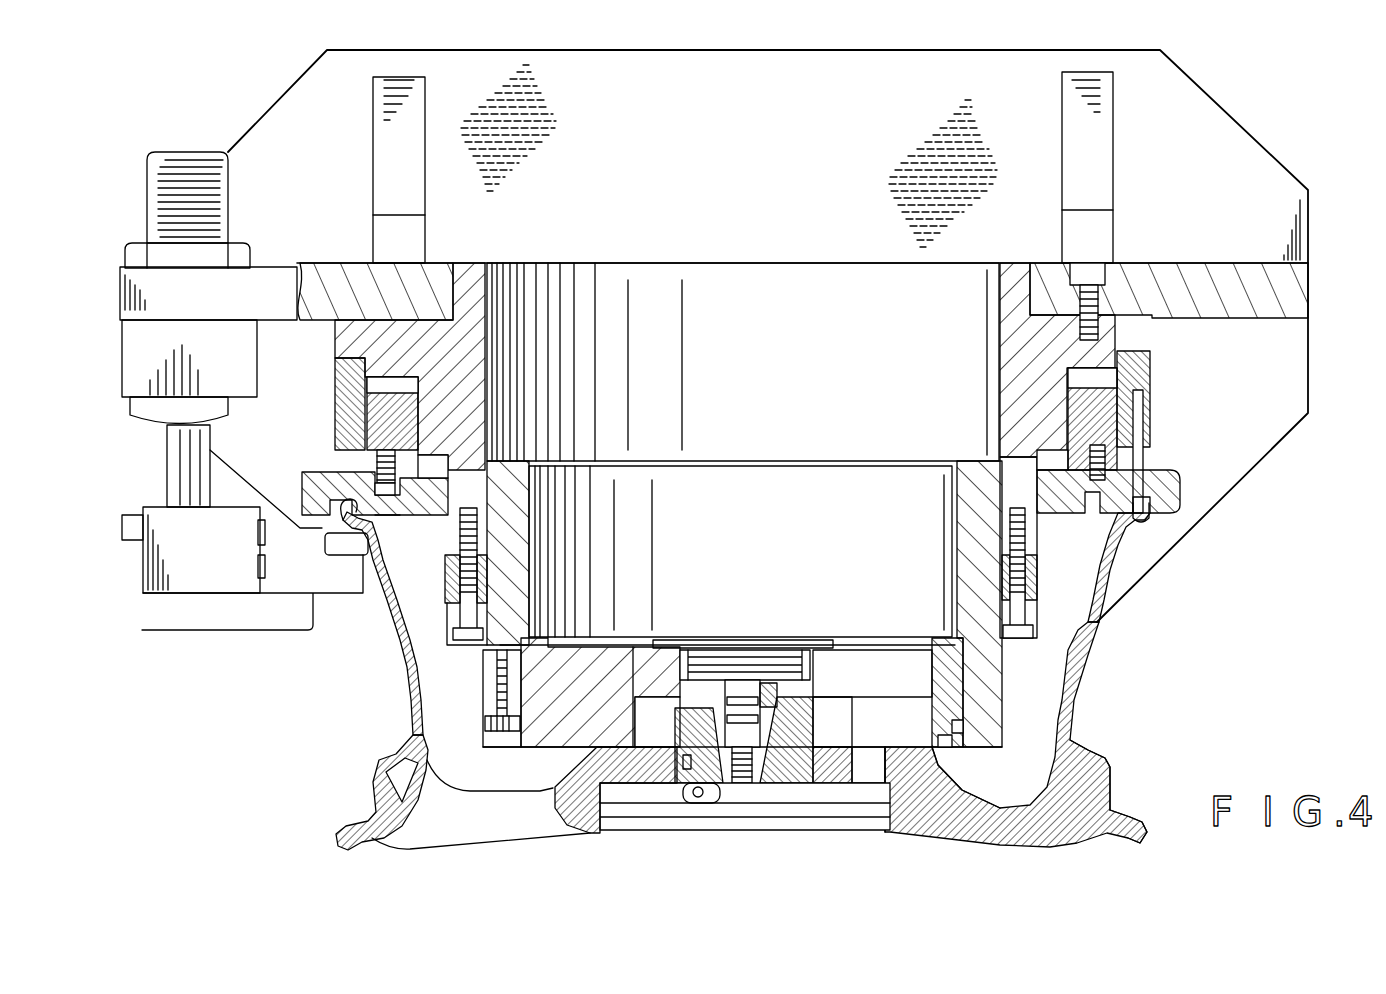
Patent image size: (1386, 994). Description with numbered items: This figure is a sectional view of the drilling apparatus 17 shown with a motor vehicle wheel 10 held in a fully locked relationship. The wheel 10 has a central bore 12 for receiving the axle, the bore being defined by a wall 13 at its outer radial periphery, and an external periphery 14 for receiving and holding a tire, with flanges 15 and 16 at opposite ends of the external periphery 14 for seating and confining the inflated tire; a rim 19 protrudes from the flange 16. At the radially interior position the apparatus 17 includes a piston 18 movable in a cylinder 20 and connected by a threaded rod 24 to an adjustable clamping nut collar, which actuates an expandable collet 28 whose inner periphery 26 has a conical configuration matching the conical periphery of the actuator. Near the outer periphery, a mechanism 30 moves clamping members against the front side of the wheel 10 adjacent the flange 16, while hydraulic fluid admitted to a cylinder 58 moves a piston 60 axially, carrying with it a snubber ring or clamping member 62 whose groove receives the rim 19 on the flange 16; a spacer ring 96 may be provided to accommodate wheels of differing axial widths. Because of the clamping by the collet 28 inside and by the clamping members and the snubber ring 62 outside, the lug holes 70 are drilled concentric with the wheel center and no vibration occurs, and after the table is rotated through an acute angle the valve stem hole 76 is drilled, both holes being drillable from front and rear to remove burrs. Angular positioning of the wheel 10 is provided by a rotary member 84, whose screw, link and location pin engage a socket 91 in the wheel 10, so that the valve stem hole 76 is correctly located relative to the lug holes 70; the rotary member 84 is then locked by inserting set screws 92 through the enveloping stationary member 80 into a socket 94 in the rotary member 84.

The apparatus 17 is at (768, 416).
The mechanism 30 is at (234, 400).
The piston 60 is at (393, 403).
The cylinder 58 is at (1064, 430).
The snubber ring or clamping member 62 is at (1183, 481).
The rim 19 is at (1150, 516).
The flange 16 is at (1130, 525).
The spacer ring 96 is at (1040, 577).
The stationary member 80 is at (992, 658).
The motor vehicle wheel 10 is at (1087, 635).
The external periphery 14 is at (1113, 785).
The flange 15 is at (1157, 831).
The lug holes 70 is at (857, 758).
The socket 94 is at (953, 723).
The rotary member 84 is at (943, 743).
The piston 18 is at (745, 660).
The inner periphery 26 is at (712, 649).
The expandable collet 28 is at (658, 648).
The cylinder 20 is at (841, 655).
The threaded rod 24 is at (757, 796).
The central bore 12 is at (717, 793).
The wall 13 is at (660, 778).
The socket 91 is at (481, 804).
The set screws 92 is at (490, 720).
The valve stem hole 76 is at (397, 757).